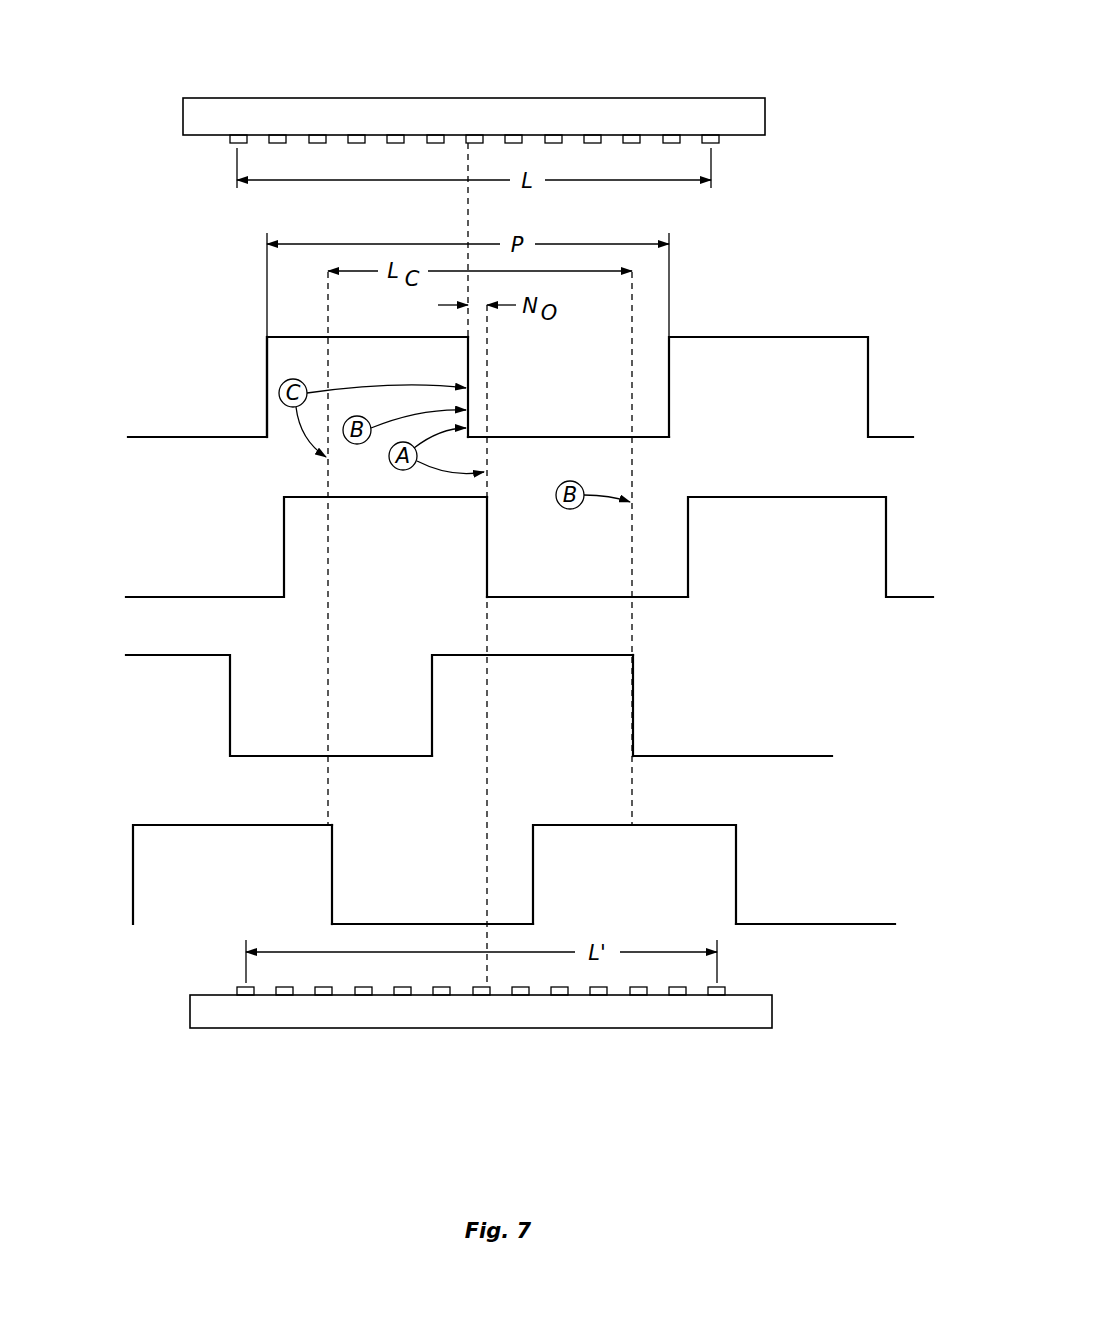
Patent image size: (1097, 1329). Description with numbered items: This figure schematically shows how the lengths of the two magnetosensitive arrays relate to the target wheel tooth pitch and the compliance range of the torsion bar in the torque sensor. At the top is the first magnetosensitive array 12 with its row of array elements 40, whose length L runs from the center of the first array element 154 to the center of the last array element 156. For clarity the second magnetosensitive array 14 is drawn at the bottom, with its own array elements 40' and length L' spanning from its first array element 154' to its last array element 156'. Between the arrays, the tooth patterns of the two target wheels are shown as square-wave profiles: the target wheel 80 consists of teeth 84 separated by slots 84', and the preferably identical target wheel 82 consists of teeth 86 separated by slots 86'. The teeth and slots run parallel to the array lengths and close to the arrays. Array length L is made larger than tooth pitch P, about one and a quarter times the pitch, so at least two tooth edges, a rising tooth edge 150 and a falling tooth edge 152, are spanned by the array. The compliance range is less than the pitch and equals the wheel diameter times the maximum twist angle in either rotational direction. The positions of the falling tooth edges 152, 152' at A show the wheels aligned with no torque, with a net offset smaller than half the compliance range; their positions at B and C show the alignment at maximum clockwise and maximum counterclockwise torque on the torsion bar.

The magnetosensitive array 12 is at (718, 98).
The magnetosensitive array 14 is at (765, 986).
The array element 40 is at (474, 88).
The array element 40' is at (481, 1043).
The target wheel 80 is at (190, 437).
The target wheel 82 is at (212, 597).
The tooth 84 is at (791, 345).
The slot 84' is at (568, 399).
The tooth 86 is at (682, 676).
The slot 86' is at (691, 726).
The rising tooth edge 150 is at (265, 372).
The falling tooth edge 152 is at (409, 387).
The falling tooth edge 152' is at (421, 710).
The first array element 154 is at (163, 165).
The last array element 156 is at (771, 165).
The first array element 154' is at (179, 977).
The last array element 156' is at (765, 971).